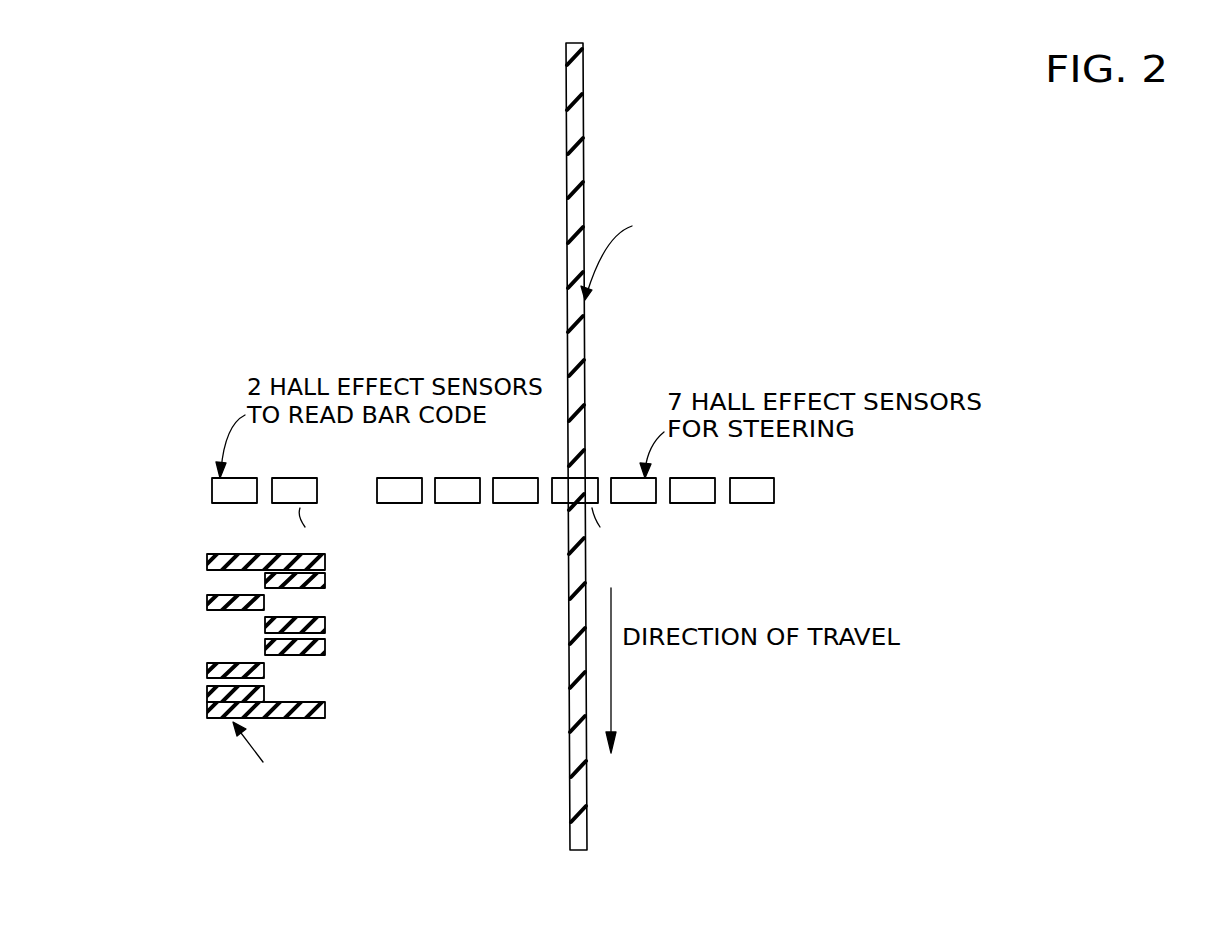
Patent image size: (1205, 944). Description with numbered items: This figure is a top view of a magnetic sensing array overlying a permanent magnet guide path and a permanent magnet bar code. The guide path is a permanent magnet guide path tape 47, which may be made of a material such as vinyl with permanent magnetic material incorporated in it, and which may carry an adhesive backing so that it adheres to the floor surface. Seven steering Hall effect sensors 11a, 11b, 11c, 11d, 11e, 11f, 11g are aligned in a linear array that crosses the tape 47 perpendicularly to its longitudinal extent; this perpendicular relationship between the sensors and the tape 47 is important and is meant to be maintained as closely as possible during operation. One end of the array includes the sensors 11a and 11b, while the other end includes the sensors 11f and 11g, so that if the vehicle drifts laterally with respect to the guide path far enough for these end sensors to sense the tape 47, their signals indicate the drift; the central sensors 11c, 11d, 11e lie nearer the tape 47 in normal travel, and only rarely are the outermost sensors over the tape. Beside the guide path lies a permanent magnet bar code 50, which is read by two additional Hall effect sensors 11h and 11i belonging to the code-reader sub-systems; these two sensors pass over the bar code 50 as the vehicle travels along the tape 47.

The permanent magnet guide path tape 47 is at (583, 146).
The permanent magnet bar code 50 is at (165, 624).
The Hall effect sensor 11a is at (388, 478).
The Hall effect sensor 11b is at (442, 478).
The Hall effect sensor 11c is at (506, 478).
The Hall effect sensor 11d is at (556, 508).
The Hall effect sensor 11e is at (629, 478).
The Hall effect sensor 11f is at (687, 478).
The Hall effect sensor 11g is at (747, 478).
The Hall effect sensor 11h is at (298, 478).
The Hall effect sensor 11i is at (238, 478).